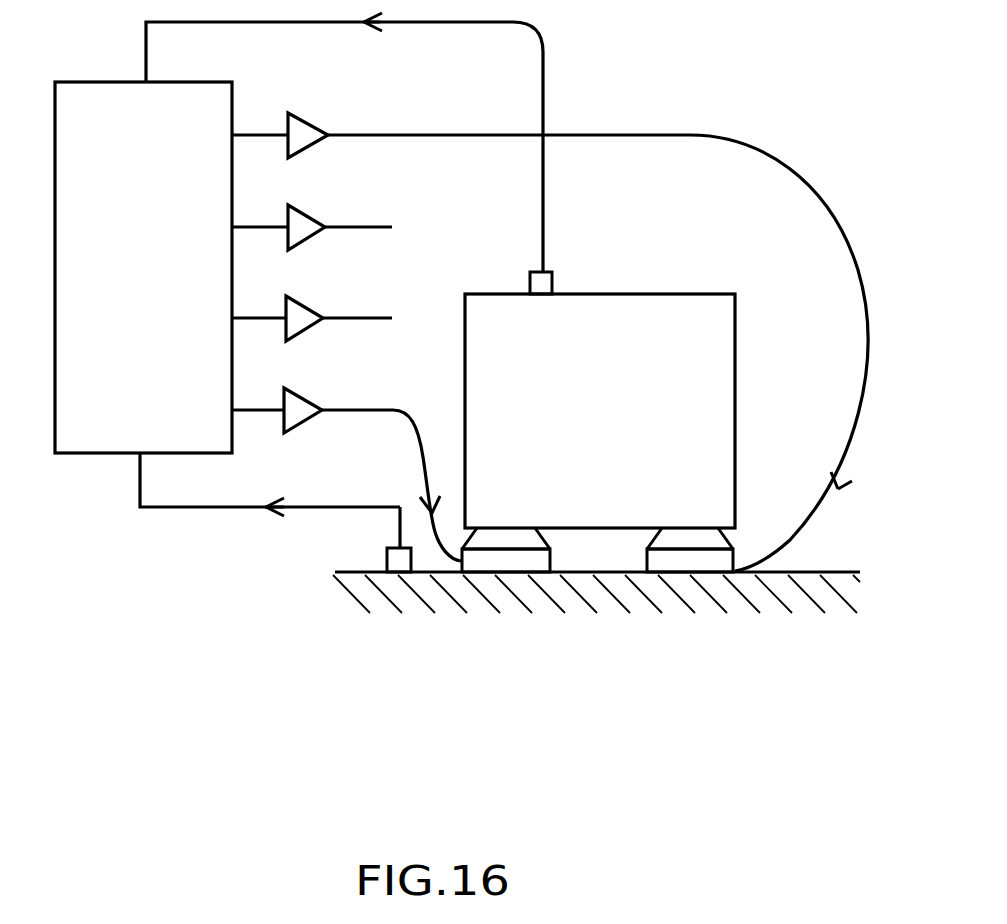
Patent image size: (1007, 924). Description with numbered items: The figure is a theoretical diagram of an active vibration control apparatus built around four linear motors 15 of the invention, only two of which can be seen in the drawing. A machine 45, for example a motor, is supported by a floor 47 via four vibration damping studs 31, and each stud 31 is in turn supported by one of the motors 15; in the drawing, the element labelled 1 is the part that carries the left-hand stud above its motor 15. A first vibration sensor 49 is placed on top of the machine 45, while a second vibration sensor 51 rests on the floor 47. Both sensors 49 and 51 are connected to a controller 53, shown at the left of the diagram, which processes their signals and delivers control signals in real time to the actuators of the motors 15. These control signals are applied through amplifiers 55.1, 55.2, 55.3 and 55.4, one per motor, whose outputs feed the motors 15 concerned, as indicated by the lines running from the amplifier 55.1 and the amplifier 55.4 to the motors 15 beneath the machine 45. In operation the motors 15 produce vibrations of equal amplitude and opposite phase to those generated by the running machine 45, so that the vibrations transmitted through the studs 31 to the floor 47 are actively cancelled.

The transducer element (left foot upper part) 1 is at (545, 538).
The motor 15 is at (556, 565).
The vibration damping stud 31 is at (656, 538).
The machine 45 is at (735, 332).
The floor 47 is at (800, 572).
The first vibration sensor 49 is at (553, 285).
The second vibration sensor 51 is at (394, 560).
The controller 53 is at (80, 455).
The amplifier 55.1 is at (307, 121).
The amplifier 55.2 is at (306, 212).
The amplifier 55.3 is at (305, 303).
The amplifier 55.4 is at (304, 396).